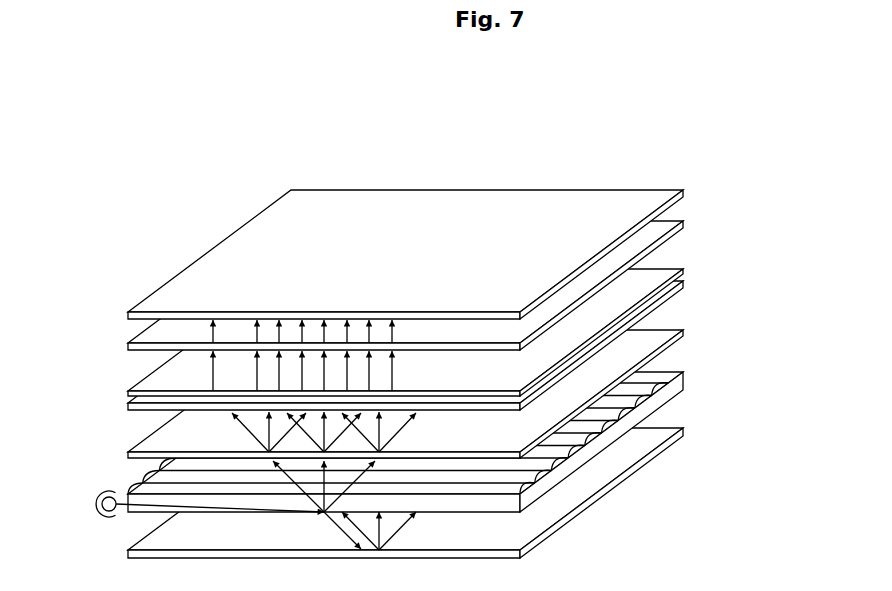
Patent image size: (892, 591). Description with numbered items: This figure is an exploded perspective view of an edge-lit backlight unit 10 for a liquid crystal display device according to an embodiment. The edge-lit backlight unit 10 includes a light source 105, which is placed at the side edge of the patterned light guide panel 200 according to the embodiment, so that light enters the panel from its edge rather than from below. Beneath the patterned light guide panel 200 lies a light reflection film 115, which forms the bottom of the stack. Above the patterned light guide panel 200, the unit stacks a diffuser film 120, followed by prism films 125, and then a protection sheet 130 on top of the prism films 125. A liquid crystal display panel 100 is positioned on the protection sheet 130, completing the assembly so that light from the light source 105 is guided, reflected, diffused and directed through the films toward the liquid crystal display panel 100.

The edge-lit backlight unit 10 is at (722, 162).
The liquid crystal display panel 100 is at (473, 204).
The protection sheet 130 is at (683, 227).
The prism films 125 is at (683, 274).
The diffuser film 120 is at (683, 333).
The patterned light guide panel 200 is at (678, 385).
The light reflection film 115 is at (683, 432).
The light source 105 is at (101, 494).